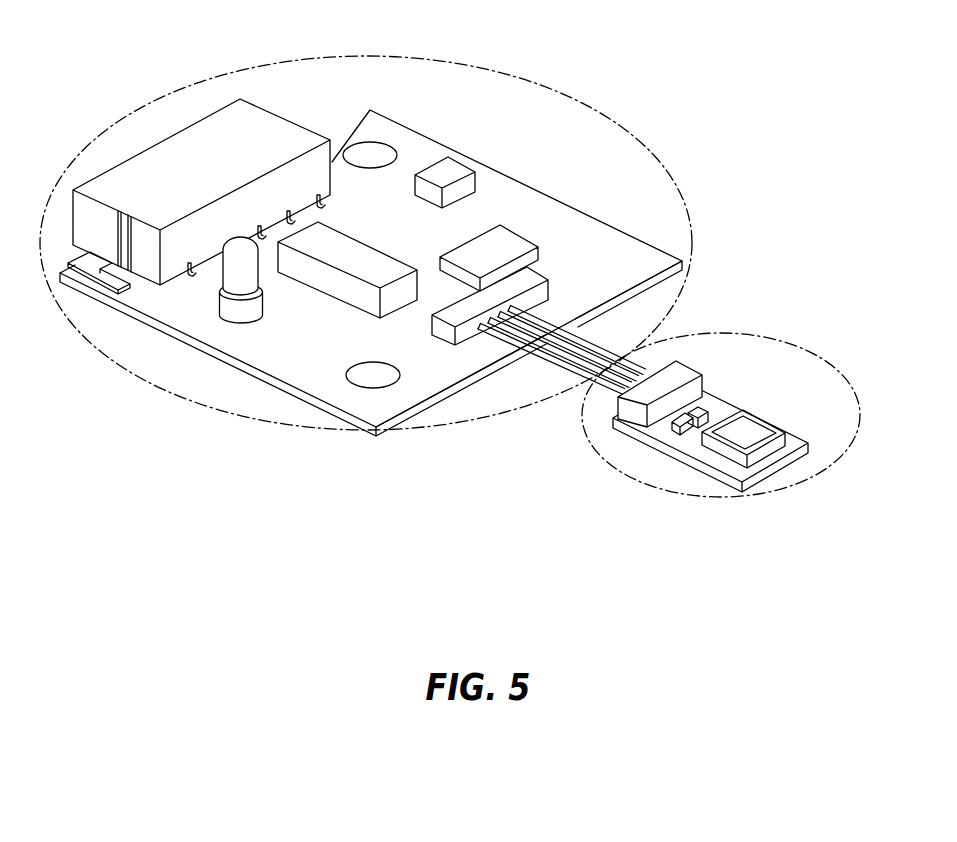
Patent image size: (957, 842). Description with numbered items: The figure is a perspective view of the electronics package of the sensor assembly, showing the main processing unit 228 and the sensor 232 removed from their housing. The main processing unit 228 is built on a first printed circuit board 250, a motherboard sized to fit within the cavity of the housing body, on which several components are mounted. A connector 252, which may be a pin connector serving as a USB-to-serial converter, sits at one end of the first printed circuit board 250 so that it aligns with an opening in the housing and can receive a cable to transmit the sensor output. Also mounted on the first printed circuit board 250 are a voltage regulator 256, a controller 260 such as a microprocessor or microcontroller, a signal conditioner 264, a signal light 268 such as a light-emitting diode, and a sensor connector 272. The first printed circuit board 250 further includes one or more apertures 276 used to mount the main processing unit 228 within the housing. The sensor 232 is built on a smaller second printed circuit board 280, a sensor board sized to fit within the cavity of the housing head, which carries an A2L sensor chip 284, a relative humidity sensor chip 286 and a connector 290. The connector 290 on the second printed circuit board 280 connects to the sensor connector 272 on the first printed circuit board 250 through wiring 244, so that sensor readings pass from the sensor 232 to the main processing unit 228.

The main processing unit 228 is at (362, 58).
The sensor 232 is at (813, 353).
The wiring 244 is at (540, 360).
The first printed circuit board 250 is at (180, 340).
The connector 252 is at (92, 218).
The voltage regulator 256 is at (455, 170).
The controller 260 is at (527, 243).
The signal conditioner 264 is at (295, 268).
The signal light 268 is at (248, 307).
The sensor connector 272 is at (445, 332).
The apertures 276 is at (377, 374).
The second printed circuit board 280 is at (742, 493).
The A2L sensor chip 284 is at (756, 428).
The relative humidity sensor chip 286 is at (677, 432).
The connector 290 is at (675, 368).